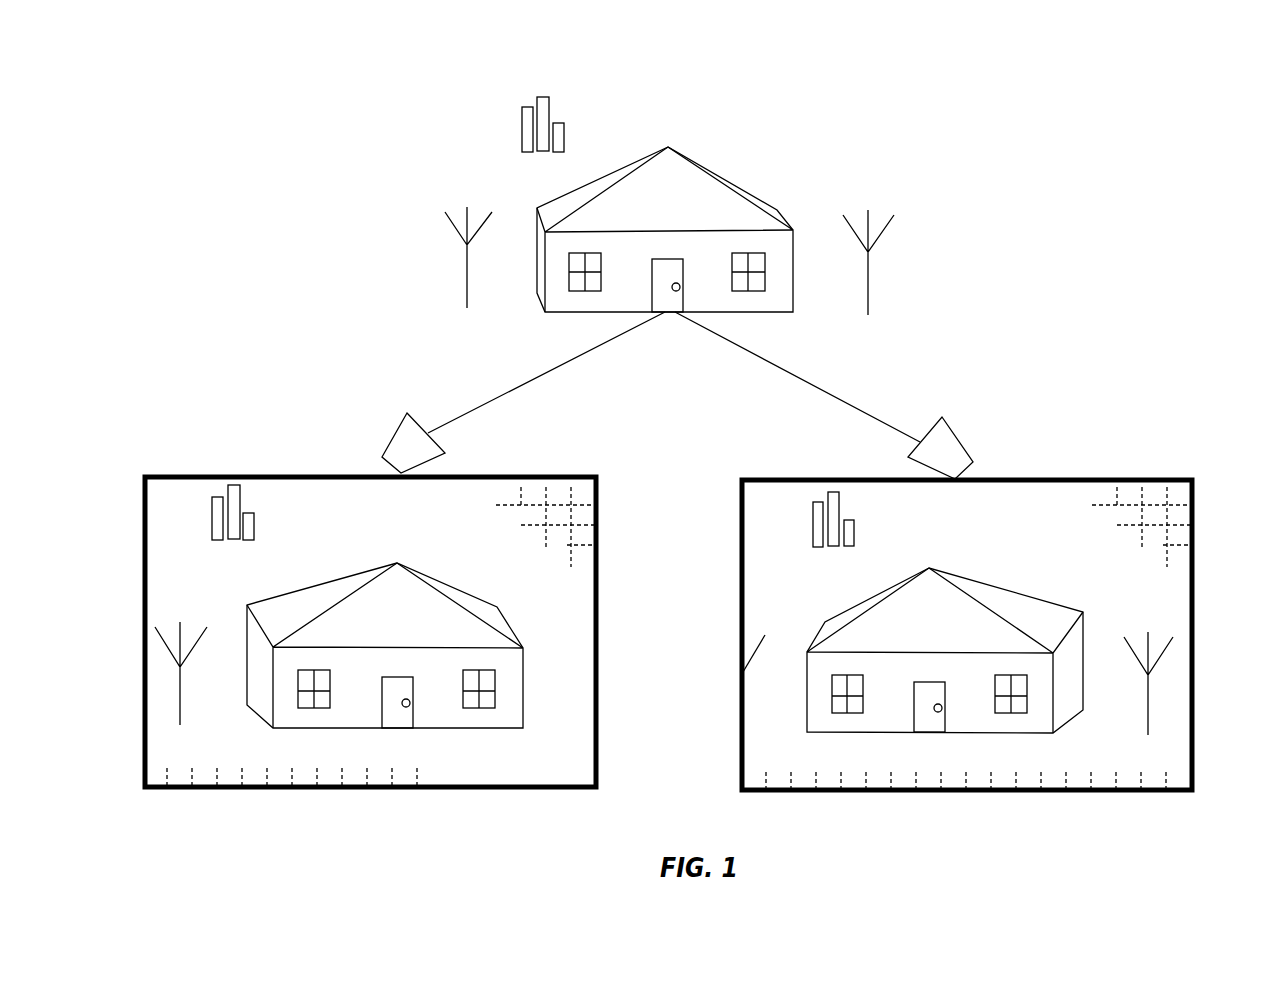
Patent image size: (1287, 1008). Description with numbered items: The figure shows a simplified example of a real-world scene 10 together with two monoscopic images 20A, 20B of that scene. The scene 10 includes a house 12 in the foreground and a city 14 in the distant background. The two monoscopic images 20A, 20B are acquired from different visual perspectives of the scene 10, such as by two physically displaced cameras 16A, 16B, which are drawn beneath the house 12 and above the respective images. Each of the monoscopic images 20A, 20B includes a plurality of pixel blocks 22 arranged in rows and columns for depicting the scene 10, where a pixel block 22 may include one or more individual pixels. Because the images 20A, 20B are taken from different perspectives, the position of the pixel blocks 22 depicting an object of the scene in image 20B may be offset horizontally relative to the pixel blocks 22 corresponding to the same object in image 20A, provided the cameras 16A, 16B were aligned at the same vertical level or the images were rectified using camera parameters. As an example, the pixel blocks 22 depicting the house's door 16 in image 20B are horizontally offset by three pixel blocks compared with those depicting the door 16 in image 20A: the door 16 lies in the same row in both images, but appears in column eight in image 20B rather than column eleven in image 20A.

The real-world scene 10 is at (1037, 127).
The house 12 is at (665, 245).
The city 14 is at (573, 122).
The house's door 16 is at (670, 298).
The camera 16A is at (398, 433).
The camera 16B is at (960, 440).
The monoscopic image 20A is at (142, 733).
The monoscopic image 20B is at (1005, 622).
The pixel block 22 is at (1150, 495).